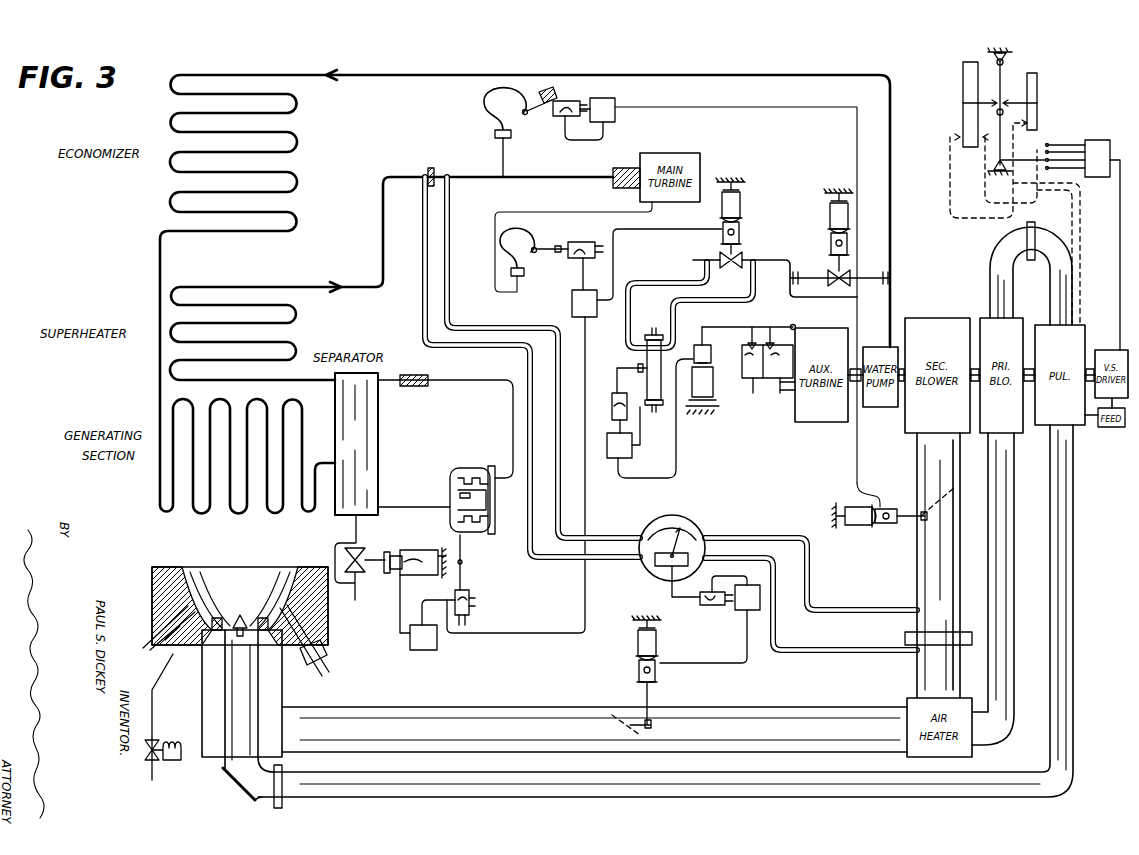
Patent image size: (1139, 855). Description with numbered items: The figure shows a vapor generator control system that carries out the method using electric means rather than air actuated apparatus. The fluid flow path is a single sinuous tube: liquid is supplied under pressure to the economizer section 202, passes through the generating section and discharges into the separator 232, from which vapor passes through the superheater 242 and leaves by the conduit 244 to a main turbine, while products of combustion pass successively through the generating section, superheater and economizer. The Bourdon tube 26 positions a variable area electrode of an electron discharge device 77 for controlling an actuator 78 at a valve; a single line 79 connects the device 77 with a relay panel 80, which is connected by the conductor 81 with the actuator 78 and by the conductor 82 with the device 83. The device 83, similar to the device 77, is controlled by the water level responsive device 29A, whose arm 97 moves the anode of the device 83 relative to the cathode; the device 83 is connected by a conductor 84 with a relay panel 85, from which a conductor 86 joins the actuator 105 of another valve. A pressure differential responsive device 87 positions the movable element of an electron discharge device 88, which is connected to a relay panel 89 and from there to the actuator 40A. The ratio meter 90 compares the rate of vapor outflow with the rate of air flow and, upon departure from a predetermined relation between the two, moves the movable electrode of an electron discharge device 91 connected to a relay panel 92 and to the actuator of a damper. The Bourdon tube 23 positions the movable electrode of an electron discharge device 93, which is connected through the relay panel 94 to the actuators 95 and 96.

The Bourdon tube 23 is at (490, 116).
The Bourdon tube 26 is at (536, 226).
The water level responsive device 29A is at (495, 505).
The actuator 40A is at (713, 378).
The electron discharge device 77 is at (585, 241).
The actuator 78 is at (750, 213).
The line 79 is at (578, 285).
The relay panel 80 is at (574, 303).
The conductor 81 is at (622, 271).
The conductor 82 is at (585, 354).
The electron discharge device 83 is at (469, 596).
The conductor 84 is at (422, 606).
The relay panel 85 is at (437, 650).
The conductor 86 is at (400, 626).
The pressure differential responsive device 87 is at (640, 346).
The electron discharge device 88 is at (605, 404).
The relay panel 89 is at (632, 452).
The ratio meter 90 is at (688, 514).
The electron discharge device 91 is at (718, 605).
The relay panel 92 is at (760, 585).
The electron discharge device 93 is at (569, 102).
The relay panel 94 is at (618, 102).
The actuator 95 is at (828, 230).
The actuator 96 is at (856, 530).
The arm 97 is at (463, 553).
The actuator 105 is at (405, 554).
The economizer section 202 is at (210, 290).
The separator 232 is at (378, 460).
The superheater 242 is at (224, 333).
The conduit 244 is at (299, 287).